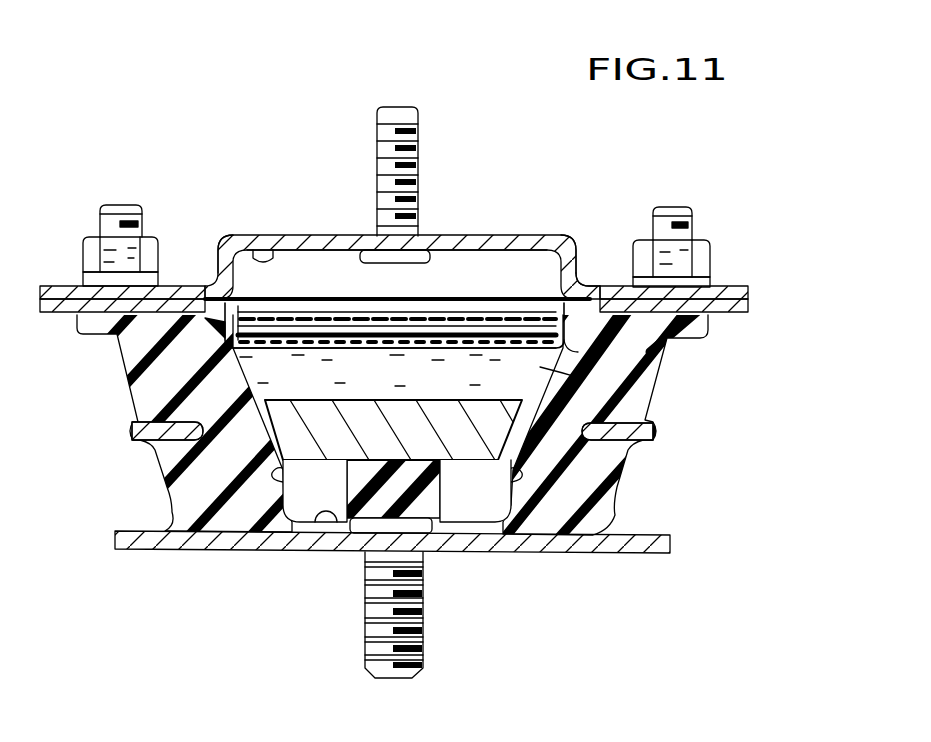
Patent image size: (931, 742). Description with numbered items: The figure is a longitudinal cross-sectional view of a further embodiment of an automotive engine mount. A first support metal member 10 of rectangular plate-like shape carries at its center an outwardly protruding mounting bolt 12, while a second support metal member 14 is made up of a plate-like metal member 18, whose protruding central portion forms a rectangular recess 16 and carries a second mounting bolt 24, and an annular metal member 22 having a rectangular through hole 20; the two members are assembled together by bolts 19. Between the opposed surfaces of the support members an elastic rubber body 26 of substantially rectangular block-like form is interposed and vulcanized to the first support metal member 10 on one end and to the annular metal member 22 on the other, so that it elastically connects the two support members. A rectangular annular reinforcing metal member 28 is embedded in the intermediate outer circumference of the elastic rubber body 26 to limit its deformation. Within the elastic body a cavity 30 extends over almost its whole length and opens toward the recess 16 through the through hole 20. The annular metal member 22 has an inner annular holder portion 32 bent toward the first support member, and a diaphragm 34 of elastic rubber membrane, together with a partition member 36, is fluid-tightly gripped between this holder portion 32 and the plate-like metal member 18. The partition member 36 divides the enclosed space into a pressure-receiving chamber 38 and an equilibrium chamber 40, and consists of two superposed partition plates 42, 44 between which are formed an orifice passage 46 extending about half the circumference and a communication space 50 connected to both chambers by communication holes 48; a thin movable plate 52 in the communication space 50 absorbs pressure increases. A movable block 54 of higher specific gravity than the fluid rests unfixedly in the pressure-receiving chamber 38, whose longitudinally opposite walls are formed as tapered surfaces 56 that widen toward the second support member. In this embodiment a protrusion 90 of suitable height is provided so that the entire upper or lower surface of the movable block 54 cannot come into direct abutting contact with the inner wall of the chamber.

The first support metal member 10 is at (465, 575).
The mounting bolt 12 is at (374, 645).
The second support metal member 14 is at (547, 212).
The rectangular recess 16 is at (250, 296).
The plate-like metal member 18 is at (479, 240).
The bolts 19 is at (88, 211).
The rectangular through hole 20 is at (258, 358).
The annular metal member 22 is at (724, 312).
The mounting bolt 24 is at (376, 123).
The elastic rubber body 26 is at (642, 456).
The rectangular annular reinforcing metal member 28 is at (134, 430).
The cavity 30 is at (341, 534).
The annular holder portion 32 is at (578, 352).
The diaphragm 34 is at (321, 296).
The partition member 36 is at (515, 372).
The pressure-receiving chamber 38 is at (303, 502).
The equilibrium chamber 40 is at (240, 250).
The partition plate 42 is at (557, 243).
The partition plate 44 is at (540, 367).
The orifice passage 46 is at (570, 264).
The communication holes 48 is at (277, 303).
The communication space 50 is at (362, 297).
The movable plate 52 is at (394, 373).
The movable block 54 is at (283, 423).
The tapered surfaces 56 is at (272, 477).
The protrusion 90 is at (475, 527).